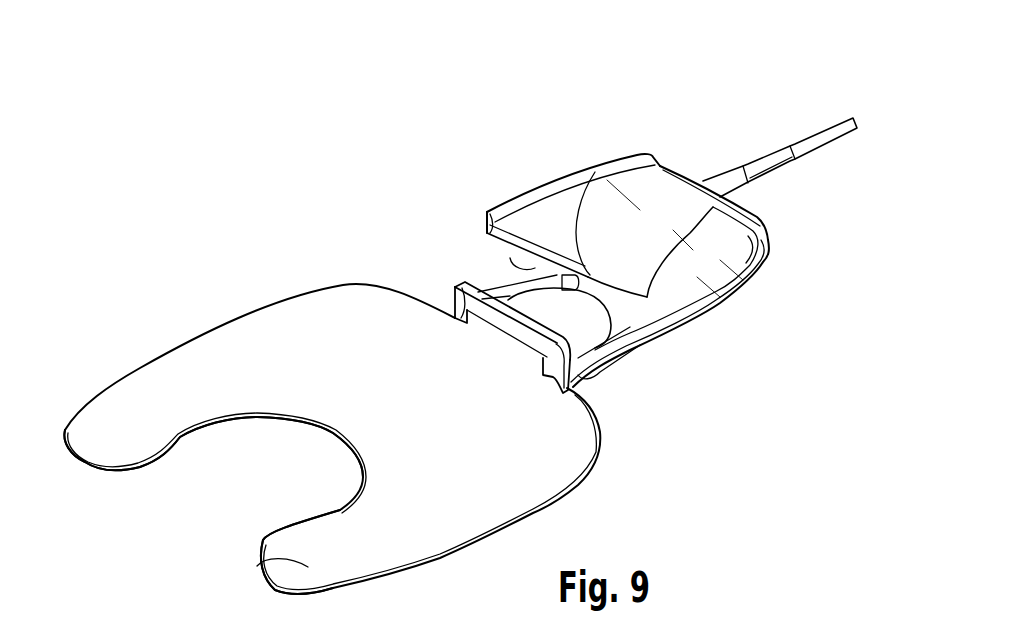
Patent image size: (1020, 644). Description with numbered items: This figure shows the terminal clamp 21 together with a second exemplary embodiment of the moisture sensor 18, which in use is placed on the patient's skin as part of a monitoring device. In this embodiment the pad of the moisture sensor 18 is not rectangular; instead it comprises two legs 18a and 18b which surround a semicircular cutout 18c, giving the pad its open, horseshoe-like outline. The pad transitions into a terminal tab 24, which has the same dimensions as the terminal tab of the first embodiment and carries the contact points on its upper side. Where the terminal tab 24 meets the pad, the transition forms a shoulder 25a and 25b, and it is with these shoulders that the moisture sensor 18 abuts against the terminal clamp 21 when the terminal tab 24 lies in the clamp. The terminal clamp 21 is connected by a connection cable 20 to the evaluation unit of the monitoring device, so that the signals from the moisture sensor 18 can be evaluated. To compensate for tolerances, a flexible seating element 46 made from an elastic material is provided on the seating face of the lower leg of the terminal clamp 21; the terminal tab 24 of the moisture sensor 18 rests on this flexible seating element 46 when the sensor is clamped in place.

The moisture sensor 18 is at (246, 300).
The leg 18a is at (98, 430).
The leg 18b is at (273, 547).
The semicircular cutout 18c is at (257, 487).
The connection cable 20 is at (822, 137).
The terminal clamp 21 is at (653, 133).
The terminal tab 24 is at (595, 334).
The shoulder 25a is at (455, 287).
The shoulder 25b is at (575, 392).
The flexible seating element 46 is at (632, 318).